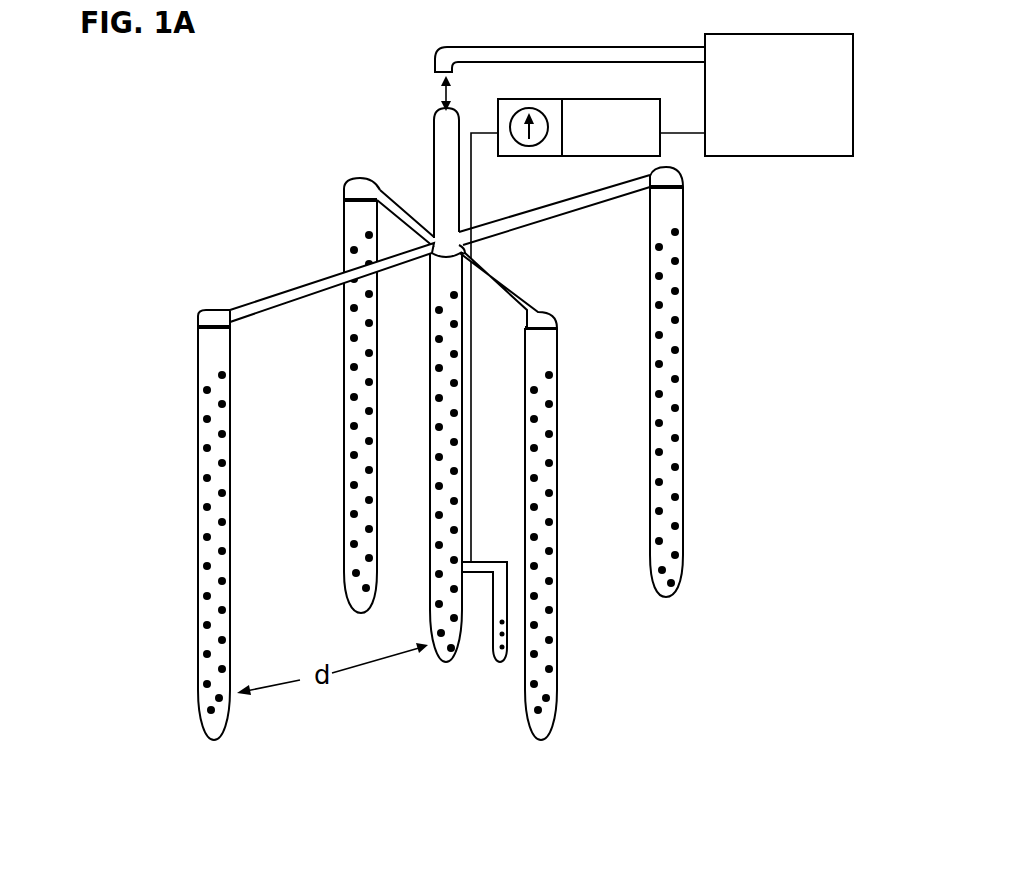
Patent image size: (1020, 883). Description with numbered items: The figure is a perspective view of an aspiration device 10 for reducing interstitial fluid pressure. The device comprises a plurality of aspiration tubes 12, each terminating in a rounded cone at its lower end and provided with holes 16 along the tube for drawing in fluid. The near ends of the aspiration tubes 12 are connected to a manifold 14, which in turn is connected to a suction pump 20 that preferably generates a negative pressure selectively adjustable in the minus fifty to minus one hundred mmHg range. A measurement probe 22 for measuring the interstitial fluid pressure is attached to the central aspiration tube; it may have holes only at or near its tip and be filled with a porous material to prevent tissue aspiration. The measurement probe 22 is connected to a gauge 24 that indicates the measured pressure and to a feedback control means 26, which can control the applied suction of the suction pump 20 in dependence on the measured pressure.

The aspiration device 10 is at (152, 372).
The aspiration tubes 12 is at (200, 523).
The manifold 14 is at (282, 277).
The aspiration holes 16 is at (206, 629).
The suction pump 20 is at (853, 133).
The measurement probe 22 is at (498, 665).
The gauge 24 is at (529, 109).
The feedback control means 26 is at (588, 317).